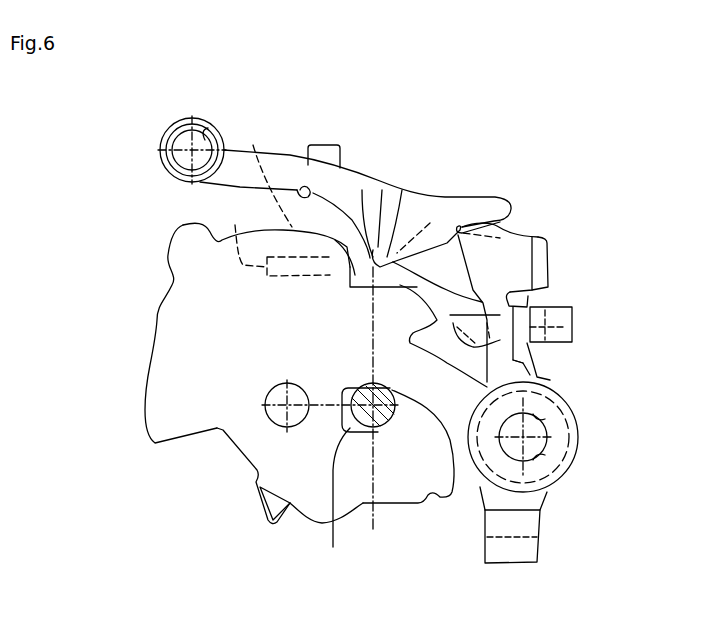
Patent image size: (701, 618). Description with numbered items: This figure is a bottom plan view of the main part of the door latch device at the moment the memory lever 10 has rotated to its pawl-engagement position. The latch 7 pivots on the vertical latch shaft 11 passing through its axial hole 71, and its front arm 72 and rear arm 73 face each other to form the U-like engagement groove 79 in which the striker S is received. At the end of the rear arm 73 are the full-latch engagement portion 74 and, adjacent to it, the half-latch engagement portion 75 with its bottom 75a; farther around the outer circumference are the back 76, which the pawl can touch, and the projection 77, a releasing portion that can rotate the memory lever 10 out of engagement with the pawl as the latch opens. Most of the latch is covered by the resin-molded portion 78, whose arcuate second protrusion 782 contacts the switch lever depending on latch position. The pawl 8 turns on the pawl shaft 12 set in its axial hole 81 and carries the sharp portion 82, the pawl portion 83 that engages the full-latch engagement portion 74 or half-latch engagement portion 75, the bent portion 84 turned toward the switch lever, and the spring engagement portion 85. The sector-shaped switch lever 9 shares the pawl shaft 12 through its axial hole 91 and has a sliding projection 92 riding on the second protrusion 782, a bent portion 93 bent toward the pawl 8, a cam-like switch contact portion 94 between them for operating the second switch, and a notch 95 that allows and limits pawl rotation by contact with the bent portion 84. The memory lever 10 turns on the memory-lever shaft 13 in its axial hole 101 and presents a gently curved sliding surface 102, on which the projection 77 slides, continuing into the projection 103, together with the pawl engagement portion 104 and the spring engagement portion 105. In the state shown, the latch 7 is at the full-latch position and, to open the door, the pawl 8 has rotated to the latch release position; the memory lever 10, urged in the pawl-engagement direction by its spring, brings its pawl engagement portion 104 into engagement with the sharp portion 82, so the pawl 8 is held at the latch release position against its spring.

The latch 7 is at (135, 410).
The pawl 8 is at (591, 438).
The switch lever 9 is at (559, 247).
The memory lever 10 is at (508, 189).
The latch shaft 11 is at (265, 440).
The pawl shaft 12 is at (536, 452).
The memory-lever shaft 13 is at (170, 133).
The axial hole 71 is at (278, 418).
The front arm 72 is at (450, 500).
The rear arm 73 is at (532, 297).
The full-latch engagement portion 74 is at (488, 387).
The half-latch engagement portion 75 is at (362, 190).
The bottom 75a is at (335, 240).
The back 76 is at (268, 175).
The projection 77 is at (183, 225).
The resin-molded portion 78 is at (170, 323).
The second protrusion 782 is at (244, 234).
The engagement groove 79 is at (410, 412).
The axial hole 81 is at (538, 450).
The sharp portion 82 is at (460, 228).
The pawl portion 83 is at (520, 352).
The bent portion 84 is at (572, 312).
The spring engagement portion 85 is at (545, 548).
The axial hole 91 is at (543, 423).
The sliding projection 92 is at (402, 190).
The bent portion 93 is at (540, 265).
The switch contact portion 94 is at (430, 223).
The notch 95 is at (573, 323).
The axial hole 101 is at (205, 140).
The sliding surface 102 is at (297, 188).
The projection 103 is at (382, 190).
The pawl engagement portion 104 is at (505, 223).
The spring engagement portion 105 is at (318, 143).
The striker S is at (338, 501).